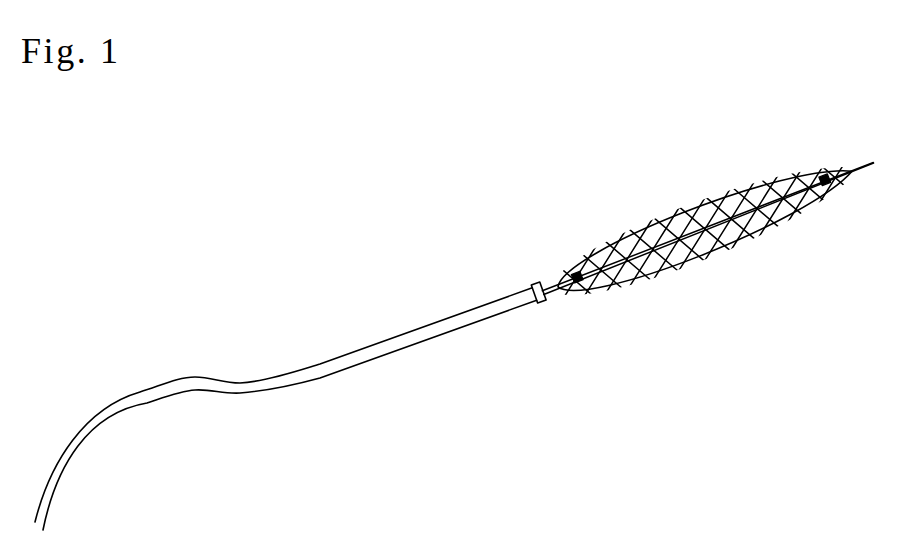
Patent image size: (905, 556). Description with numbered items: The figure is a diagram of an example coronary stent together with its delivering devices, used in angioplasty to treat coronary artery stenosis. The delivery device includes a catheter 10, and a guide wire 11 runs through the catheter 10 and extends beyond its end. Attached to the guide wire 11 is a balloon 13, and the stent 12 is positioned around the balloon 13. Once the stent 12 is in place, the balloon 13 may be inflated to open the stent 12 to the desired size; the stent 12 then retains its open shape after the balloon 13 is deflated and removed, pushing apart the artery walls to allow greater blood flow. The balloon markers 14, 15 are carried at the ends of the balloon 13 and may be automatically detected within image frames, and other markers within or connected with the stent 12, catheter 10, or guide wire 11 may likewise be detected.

The catheter 10 is at (286, 409).
The guide wire 11 is at (571, 316).
The stent 12 is at (704, 238).
The balloon 13 is at (704, 229).
The balloon marker 14 is at (553, 248).
The balloon marker 15 is at (803, 147).